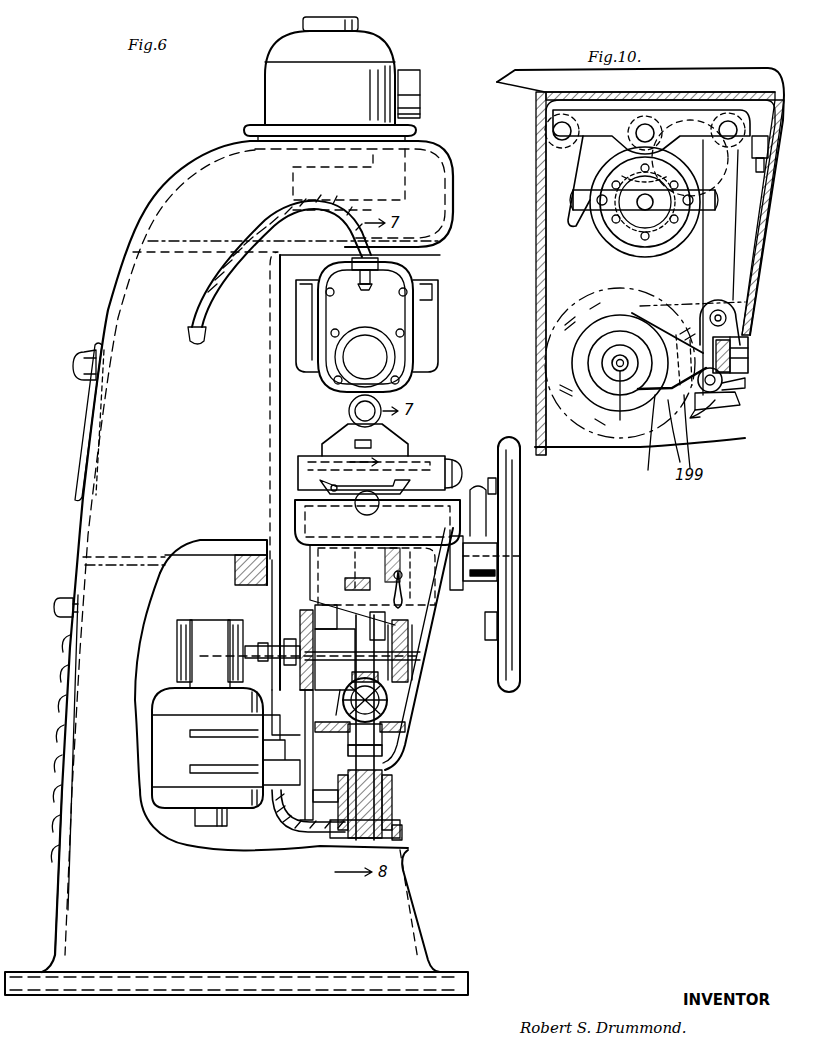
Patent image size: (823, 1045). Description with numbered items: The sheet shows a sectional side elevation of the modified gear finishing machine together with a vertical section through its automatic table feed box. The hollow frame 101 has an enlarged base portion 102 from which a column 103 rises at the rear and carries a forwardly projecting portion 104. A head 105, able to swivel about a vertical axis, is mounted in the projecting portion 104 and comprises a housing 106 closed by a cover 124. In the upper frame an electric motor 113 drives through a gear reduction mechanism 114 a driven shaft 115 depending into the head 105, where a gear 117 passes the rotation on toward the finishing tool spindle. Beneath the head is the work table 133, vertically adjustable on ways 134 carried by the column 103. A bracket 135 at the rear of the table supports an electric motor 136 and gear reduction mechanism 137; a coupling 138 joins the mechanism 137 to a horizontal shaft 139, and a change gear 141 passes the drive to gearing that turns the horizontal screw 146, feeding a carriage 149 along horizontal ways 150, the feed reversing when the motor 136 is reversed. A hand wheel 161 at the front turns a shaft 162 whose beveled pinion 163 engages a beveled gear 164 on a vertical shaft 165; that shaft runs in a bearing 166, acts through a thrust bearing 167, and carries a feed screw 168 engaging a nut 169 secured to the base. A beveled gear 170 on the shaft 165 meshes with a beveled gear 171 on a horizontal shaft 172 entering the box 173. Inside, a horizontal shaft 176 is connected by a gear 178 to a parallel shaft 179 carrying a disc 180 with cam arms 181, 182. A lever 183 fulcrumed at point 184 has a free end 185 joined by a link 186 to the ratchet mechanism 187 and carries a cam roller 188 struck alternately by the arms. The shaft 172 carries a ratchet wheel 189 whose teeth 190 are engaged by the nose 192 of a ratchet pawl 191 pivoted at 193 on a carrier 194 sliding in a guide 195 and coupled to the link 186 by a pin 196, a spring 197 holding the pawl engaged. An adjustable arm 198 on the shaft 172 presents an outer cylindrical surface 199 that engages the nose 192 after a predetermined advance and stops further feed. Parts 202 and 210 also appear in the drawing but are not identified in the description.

In FIG. 6, the frame 101 is at (80, 532).
In FIG. 6, the base portion 102 is at (412, 876).
In FIG. 6, the column 103 is at (130, 302).
In FIG. 6, the forwardly projecting portion 104 is at (437, 210).
In FIG. 6, the head 105 is at (436, 330).
In FIG. 6, the housing 106 is at (428, 305).
In FIG. 6, the electric motor 113 is at (270, 82).
In FIG. 6, the gear reduction mechanism 114 is at (373, 192).
In FIG. 6, the driven shaft 115 is at (335, 234).
In FIG. 10, the gear 117 is at (700, 172).
In FIG. 6, the cover 124 is at (340, 313).
In FIG. 6, the work table 133 is at (432, 672).
In FIG. 6, the ways 134 is at (328, 797).
In FIG. 6, the bracket 135 is at (297, 708).
In FIG. 6, the electric motor 136 is at (165, 773).
In FIG. 6, the gear reduction mechanism 137 is at (204, 626).
In FIG. 6, the coupling 138 is at (276, 633).
In FIG. 6, the horizontal shaft 139 is at (328, 652).
In FIG. 6, the change gear 141 is at (414, 656).
In FIG. 6, the horizontal screw 146 is at (372, 508).
In FIG. 6, the carriage 149 is at (415, 460).
In FIG. 6, the horizontal ways 150 is at (405, 490).
In FIG. 6, the hand wheel 161 is at (505, 548).
In FIG. 6, the shaft 162 is at (420, 578).
In FIG. 6, the beveled pinion 163 is at (384, 556).
In FIG. 6, the beveled gear 164 is at (358, 582).
In FIG. 6, the vertical shaft 165 is at (372, 634).
In FIG. 6, the bearing 166 is at (382, 726).
In FIG. 6, the thrust bearing 167 is at (384, 748).
In FIG. 6, the feed screw 168 is at (385, 806).
In FIG. 6, the nut 169 is at (325, 805).
In FIG. 6, the beveled gear 170 is at (338, 682).
In FIG. 6, the beveled gear 171 is at (387, 702).
In FIG. 10, the horizontal shaft 172 is at (620, 395).
In FIG. 10, the box 173 is at (538, 243).
In FIG. 10, the horizontal shaft 176 is at (690, 118).
In FIG. 10, the gear 178 is at (655, 215).
In FIG. 10, the parallel shaft 179 is at (640, 210).
In FIG. 10, the disc 180 is at (640, 228).
In FIG. 10, the cam arm 181 is at (590, 212).
In FIG. 10, the cam arm 182 is at (697, 210).
In FIG. 10, the lever 183 is at (605, 120).
In FIG. 10, the pivot point 184 is at (553, 129).
In FIG. 10, the free end 185 is at (745, 120).
In FIG. 10, the link 186 is at (722, 258).
In FIG. 10, the ratchet mechanism 187 is at (710, 433).
In FIG. 10, the cam roller 188 is at (590, 181).
In FIG. 10, the ratchet wheel 189 is at (680, 415).
In FIG. 10, the teeth 190 is at (660, 346).
In FIG. 10, the ratchet pawl 191 is at (748, 352).
In FIG. 10, the nose 192 is at (676, 348).
In FIG. 10, the pivot 193 is at (724, 386).
In FIG. 10, the carrier 194 is at (722, 408).
In FIG. 10, the guide 195 is at (745, 340).
In FIG. 10, the pin 196 is at (714, 312).
In FIG. 10, the spring 197 is at (748, 370).
In FIG. 10, the adjustable arm 198 is at (644, 439).
In FIG. 10, the outer cylindrical surface 199 is at (688, 345).
In FIG. 6, the bracket 202 is at (393, 440).
In FIG. 6, the switch box 210 is at (410, 97).